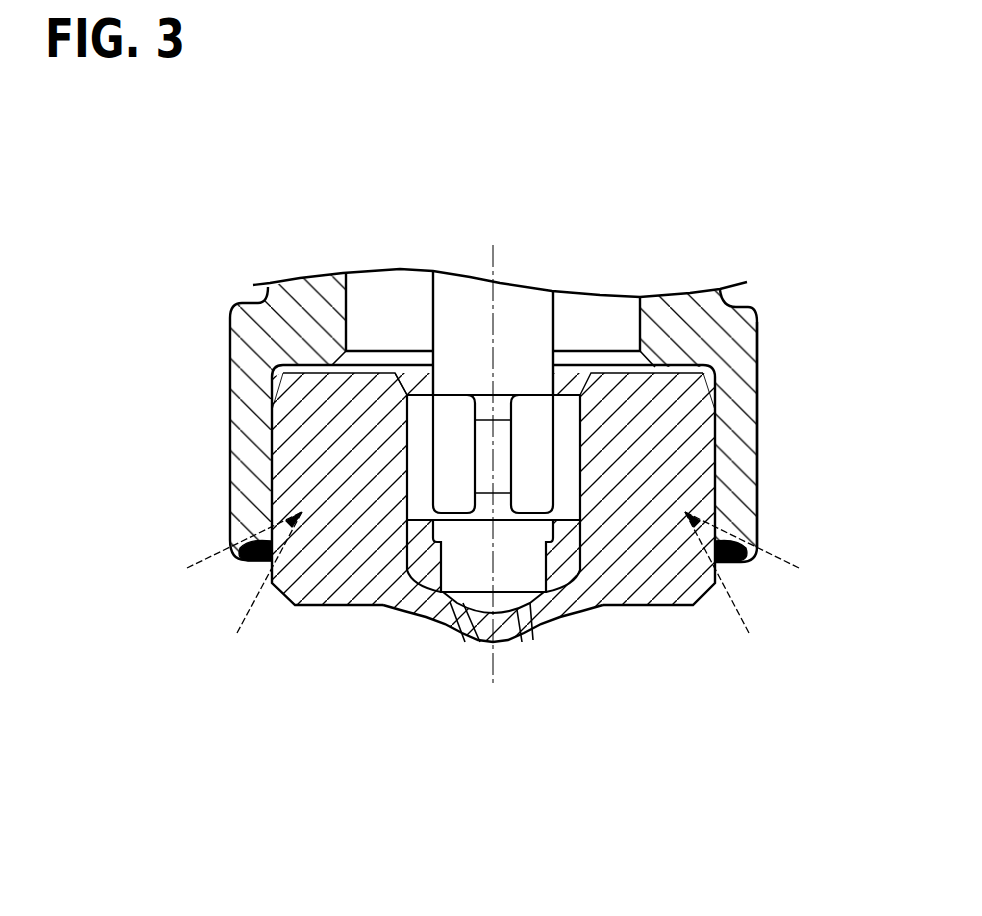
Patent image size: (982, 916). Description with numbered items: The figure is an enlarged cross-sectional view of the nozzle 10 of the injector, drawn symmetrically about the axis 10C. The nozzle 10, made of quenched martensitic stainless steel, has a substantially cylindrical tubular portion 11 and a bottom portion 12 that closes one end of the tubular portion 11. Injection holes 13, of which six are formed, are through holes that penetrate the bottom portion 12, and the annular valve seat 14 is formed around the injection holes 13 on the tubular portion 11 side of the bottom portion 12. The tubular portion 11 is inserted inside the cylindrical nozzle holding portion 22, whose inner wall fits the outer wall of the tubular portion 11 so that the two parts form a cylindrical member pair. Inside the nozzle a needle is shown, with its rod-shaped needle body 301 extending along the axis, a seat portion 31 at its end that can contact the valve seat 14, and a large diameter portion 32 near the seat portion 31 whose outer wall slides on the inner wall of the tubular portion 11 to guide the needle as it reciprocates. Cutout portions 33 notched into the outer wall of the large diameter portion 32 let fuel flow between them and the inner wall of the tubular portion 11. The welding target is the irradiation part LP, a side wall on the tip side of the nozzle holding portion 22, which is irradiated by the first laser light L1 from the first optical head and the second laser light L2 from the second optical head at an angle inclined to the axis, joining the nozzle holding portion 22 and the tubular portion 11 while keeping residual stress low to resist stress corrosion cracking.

The nozzle 10 is at (727, 437).
The central axis 10C is at (492, 450).
The tubular portion 11 is at (290, 477).
The bottom portion 12 is at (493, 615).
The injection holes 13 is at (458, 626).
The valve seat 14 is at (575, 566).
The nozzle holding portion 22 is at (750, 473).
The seat portion 31 is at (400, 608).
The large diameter portion 32 is at (453, 436).
The cutout portions 33 is at (413, 447).
The needle body 301 is at (537, 310).
The irradiation part LP is at (242, 568).
The first laser light L1 is at (729, 613).
The second laser light L2 is at (257, 613).